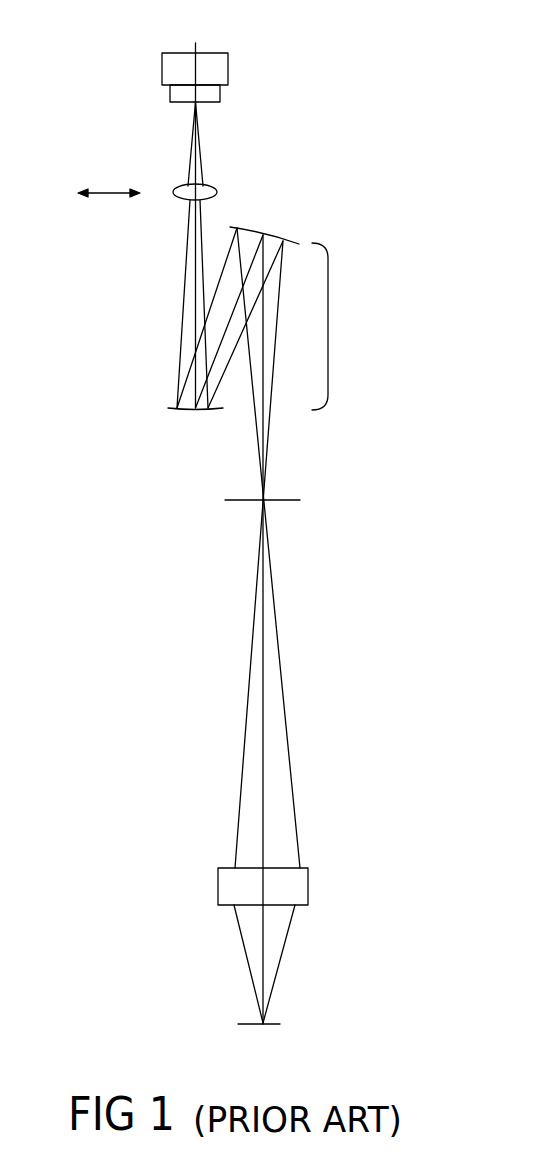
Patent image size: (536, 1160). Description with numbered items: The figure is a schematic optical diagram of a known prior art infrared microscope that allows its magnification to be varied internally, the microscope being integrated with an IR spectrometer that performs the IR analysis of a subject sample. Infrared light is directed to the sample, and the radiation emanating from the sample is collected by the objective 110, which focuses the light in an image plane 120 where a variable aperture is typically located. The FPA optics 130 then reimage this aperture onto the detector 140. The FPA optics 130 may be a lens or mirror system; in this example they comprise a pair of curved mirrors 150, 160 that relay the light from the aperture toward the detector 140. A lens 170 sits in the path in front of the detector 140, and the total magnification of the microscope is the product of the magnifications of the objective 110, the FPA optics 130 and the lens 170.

The objective 110 is at (277, 868).
The image plane 120 is at (283, 500).
The FPA optics 130 is at (328, 327).
The detector 140 is at (215, 68).
The curved mirror 150 is at (282, 240).
The curved mirror 160 is at (188, 410).
The lens 170 is at (207, 184).